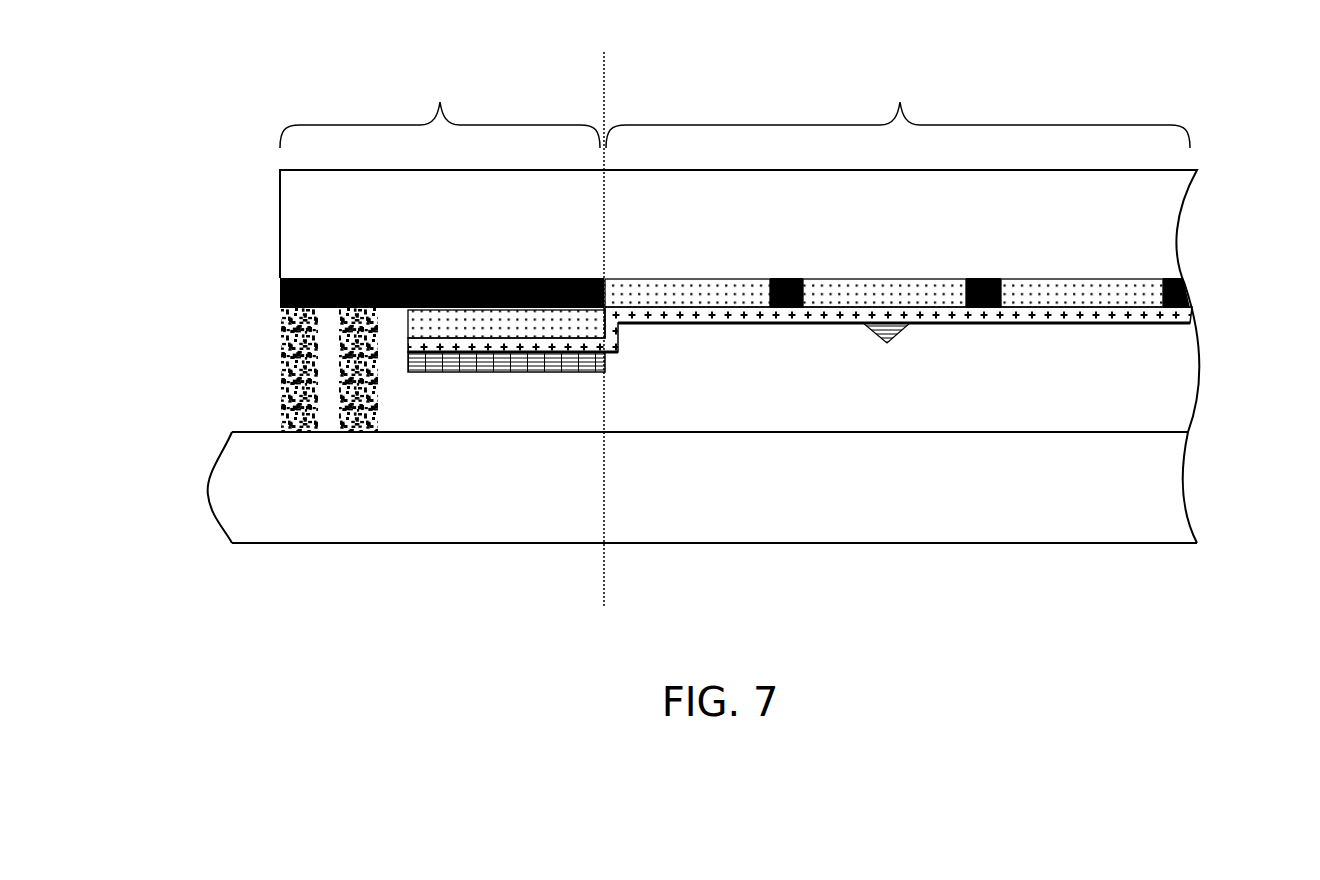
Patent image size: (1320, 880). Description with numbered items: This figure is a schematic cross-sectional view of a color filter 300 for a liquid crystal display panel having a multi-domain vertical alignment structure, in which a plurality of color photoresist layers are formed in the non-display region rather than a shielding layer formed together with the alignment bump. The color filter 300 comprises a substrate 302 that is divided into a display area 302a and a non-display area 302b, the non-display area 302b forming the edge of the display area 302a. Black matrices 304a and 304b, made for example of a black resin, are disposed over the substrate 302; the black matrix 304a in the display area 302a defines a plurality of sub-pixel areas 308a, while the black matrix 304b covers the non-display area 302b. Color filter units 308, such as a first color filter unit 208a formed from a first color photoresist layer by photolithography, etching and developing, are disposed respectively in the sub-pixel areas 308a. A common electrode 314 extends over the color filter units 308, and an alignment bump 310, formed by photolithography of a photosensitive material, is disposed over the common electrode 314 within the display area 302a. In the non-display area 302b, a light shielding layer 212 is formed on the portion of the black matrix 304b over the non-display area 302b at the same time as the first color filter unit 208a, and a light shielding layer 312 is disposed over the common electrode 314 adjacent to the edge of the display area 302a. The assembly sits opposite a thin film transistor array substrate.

The color filter 300 is at (707, 348).
The substrate 302 is at (1150, 228).
The display area 302a is at (898, 103).
The non-display area 302b is at (440, 103).
The black matrix 304a is at (1189, 292).
The black matrix 304b is at (280, 293).
The color filter units 308 is at (945, 230).
The sub-pixel area 308a is at (1053, 272).
The first color filter unit 208a is at (885, 290).
The common electrode 314 is at (1150, 318).
The alignment bump 310 is at (890, 343).
The light shielding layer 212 is at (447, 327).
The light shielding layer 312 is at (520, 370).